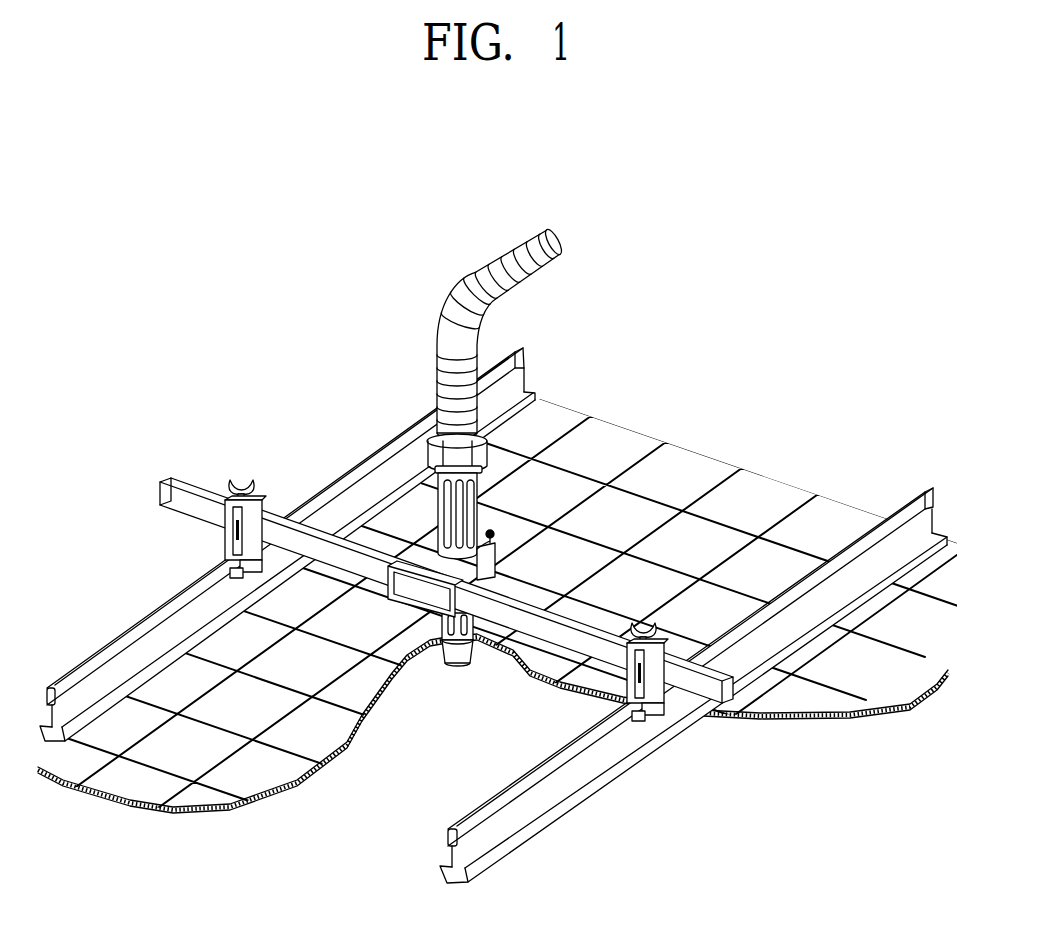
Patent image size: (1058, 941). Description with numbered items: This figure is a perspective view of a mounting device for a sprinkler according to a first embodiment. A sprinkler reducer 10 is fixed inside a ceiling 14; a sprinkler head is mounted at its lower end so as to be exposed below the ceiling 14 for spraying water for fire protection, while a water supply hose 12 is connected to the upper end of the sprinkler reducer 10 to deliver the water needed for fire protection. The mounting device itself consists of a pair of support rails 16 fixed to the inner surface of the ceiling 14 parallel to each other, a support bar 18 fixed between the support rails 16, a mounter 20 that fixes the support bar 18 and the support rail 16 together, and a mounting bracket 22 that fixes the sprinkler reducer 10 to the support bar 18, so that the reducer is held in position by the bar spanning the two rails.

The sprinkler reducer 10 is at (450, 513).
The water supply hose 12 is at (513, 280).
The ceiling 14 is at (253, 777).
The support rails 16 is at (102, 637).
The support bar 18 is at (183, 482).
The mounter 20 is at (238, 472).
The mounting bracket 22 is at (424, 566).